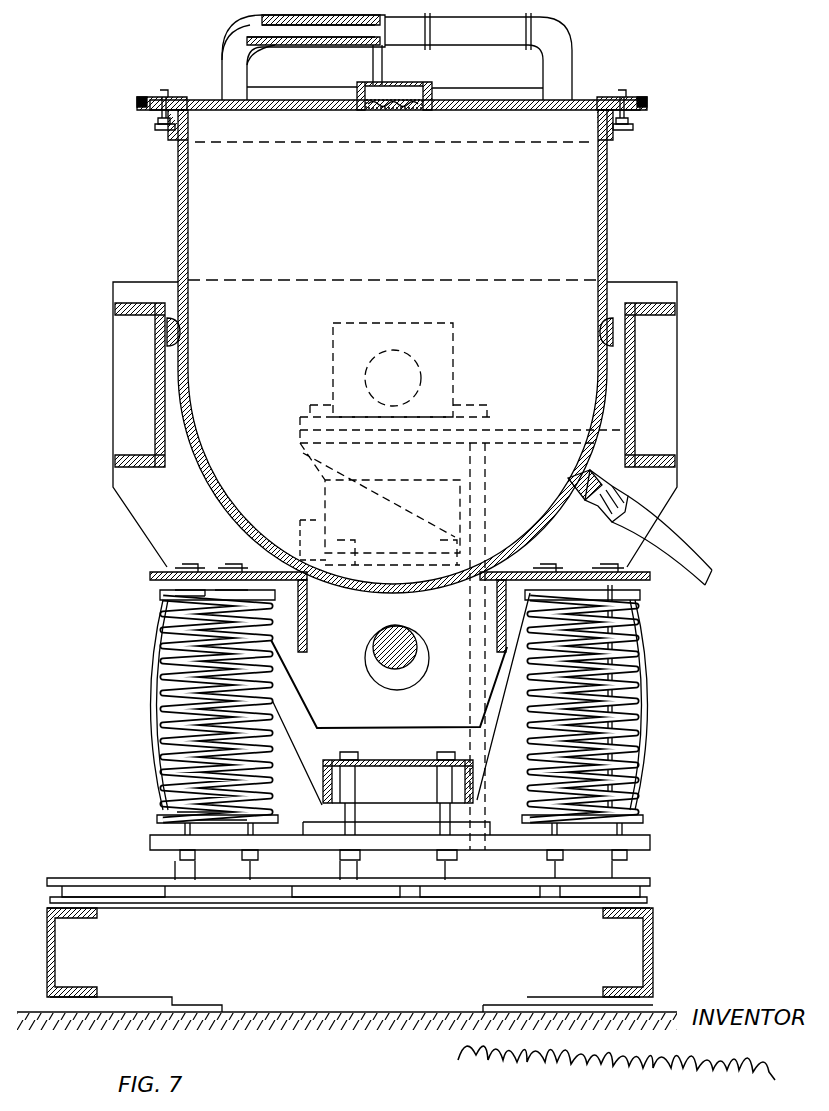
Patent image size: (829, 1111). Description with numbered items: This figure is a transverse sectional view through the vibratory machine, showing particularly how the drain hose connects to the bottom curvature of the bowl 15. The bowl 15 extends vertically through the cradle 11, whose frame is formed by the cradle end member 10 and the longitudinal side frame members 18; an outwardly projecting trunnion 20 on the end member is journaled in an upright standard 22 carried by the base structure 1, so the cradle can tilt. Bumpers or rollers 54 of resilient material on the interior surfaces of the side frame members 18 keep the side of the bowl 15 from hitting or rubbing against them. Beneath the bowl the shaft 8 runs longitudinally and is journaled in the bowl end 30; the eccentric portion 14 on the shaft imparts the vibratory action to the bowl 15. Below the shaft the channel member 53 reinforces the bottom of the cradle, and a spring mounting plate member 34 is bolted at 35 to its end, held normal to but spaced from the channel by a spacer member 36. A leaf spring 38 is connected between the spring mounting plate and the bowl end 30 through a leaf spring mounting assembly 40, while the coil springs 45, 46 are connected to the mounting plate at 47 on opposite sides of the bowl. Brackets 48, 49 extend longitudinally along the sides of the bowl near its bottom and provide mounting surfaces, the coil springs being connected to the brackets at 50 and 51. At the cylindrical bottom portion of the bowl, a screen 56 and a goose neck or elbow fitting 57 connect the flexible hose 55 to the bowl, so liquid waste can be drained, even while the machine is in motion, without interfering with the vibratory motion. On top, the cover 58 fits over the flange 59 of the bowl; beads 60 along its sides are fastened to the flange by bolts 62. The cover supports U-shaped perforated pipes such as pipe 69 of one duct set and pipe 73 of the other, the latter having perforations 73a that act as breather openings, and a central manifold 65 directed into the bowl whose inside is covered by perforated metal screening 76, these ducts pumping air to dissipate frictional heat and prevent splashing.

The base structure 1 is at (48, 968).
The shaft 8 is at (412, 645).
The cradle end member 10 is at (628, 290).
The cradle 11 is at (105, 289).
The eccentric portion 14 is at (382, 678).
The bowl 15 is at (615, 210).
The longitudinal side frame member 18 is at (660, 300).
The trunnion 20 is at (390, 355).
The upright standard 22 is at (500, 440).
The bowl end 30 is at (515, 255).
The spring mounting plate member 34 is at (650, 862).
The bolt connection 35 is at (372, 790).
The spacer member 36 is at (405, 832).
The leaf spring 38 is at (143, 705).
The leaf spring mounting assembly 40 is at (320, 520).
The coil spring 45 is at (585, 712).
The coil spring 46 is at (215, 690).
The coil spring connection 47 is at (200, 856).
The bracket 48 is at (640, 578).
The bracket 49 is at (150, 576).
The coil spring connection 50 is at (618, 605).
The coil spring connection 51 is at (210, 565).
The channel member 53 is at (385, 760).
The bumper or roller 54 is at (188, 328).
The flexible hose 55 is at (705, 565).
The screen 56 is at (566, 484).
The goose neck or elbow fitting 57 is at (620, 500).
The cover 58 is at (145, 104).
The flange 59 is at (160, 128).
The bead 60 is at (648, 103).
The bolt 62 is at (166, 88).
The manifold 65 is at (430, 84).
The U-shaped pipe 69 is at (560, 45).
The pipe 73 is at (225, 40).
The perforation 73a is at (318, 44).
The perforated metal screening 76 is at (378, 112).